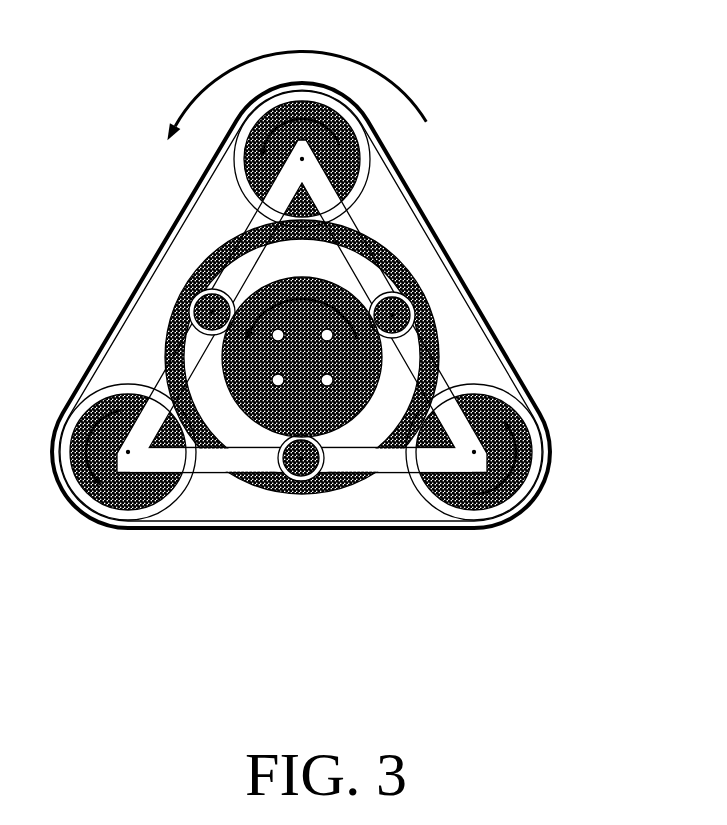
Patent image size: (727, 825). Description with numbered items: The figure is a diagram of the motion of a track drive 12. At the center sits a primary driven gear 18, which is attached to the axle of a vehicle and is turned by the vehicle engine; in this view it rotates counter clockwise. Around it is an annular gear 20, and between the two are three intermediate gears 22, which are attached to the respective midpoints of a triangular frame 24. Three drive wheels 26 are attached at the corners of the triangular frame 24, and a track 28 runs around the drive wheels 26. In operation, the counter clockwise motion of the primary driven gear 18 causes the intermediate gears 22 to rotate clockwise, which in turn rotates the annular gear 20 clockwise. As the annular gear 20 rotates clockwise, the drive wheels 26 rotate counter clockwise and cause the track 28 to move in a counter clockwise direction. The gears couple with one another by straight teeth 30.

The track drive 12 is at (148, 186).
The primary driven gear 18 is at (260, 425).
The annular gear 20 is at (350, 487).
The intermediate gears 22 is at (304, 470).
The frame 24 is at (447, 382).
The drive wheels 26 is at (550, 483).
The track 28 is at (490, 330).
The straight teeth 30 is at (301, 458).